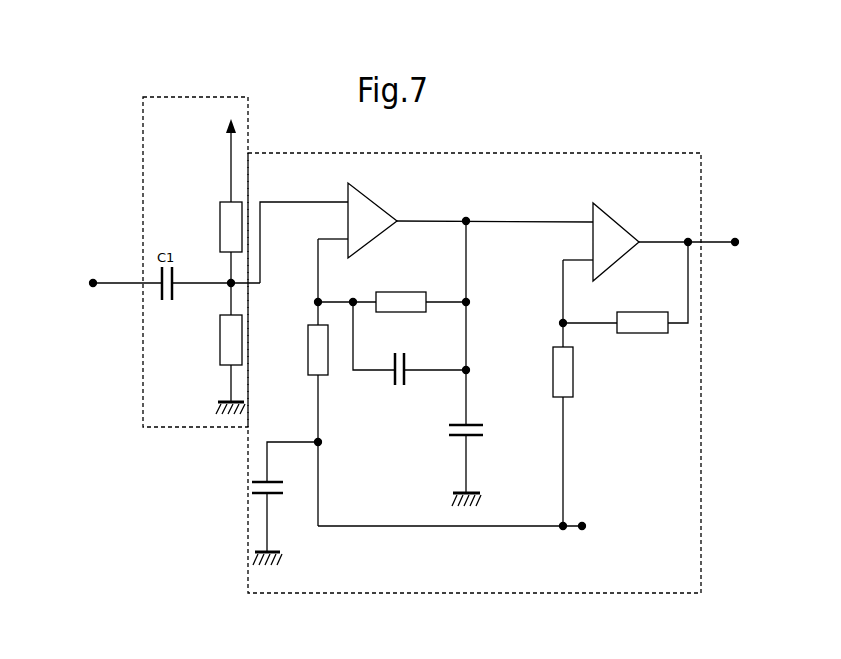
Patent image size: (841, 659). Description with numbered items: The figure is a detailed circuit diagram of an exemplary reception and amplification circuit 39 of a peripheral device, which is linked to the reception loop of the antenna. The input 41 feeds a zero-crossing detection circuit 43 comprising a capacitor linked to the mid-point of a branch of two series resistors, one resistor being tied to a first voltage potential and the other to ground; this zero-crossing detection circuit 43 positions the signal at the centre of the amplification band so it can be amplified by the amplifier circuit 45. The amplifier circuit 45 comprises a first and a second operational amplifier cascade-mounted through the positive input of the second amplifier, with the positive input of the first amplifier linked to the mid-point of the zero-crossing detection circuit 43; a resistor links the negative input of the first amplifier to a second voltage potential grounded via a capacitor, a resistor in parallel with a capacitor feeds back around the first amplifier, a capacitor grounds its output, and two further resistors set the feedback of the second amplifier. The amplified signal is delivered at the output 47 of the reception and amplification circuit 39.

The reception and amplification circuit 39 is at (120, 115).
The input 41 is at (93, 283).
The zero-crossing detection circuit 43 is at (143, 393).
The amplifier circuit 45 is at (568, 153).
The output 47 is at (735, 242).